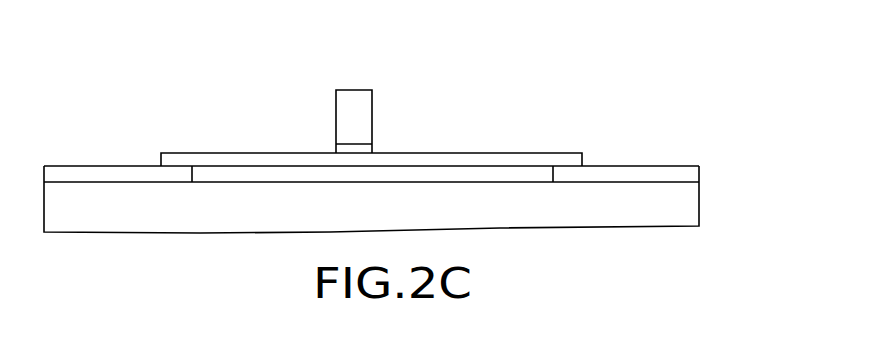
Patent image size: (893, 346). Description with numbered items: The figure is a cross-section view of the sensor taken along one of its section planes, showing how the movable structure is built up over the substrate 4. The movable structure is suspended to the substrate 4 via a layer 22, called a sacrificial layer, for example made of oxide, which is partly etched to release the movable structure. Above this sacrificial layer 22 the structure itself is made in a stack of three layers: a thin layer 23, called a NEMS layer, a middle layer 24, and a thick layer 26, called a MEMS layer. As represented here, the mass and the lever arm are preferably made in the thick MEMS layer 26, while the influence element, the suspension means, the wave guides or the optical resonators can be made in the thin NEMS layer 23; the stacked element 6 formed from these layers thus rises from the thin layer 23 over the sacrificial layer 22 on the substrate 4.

The substrate 4 is at (690, 197).
The sacrificial layer 22 is at (692, 173).
The NEMS layer 23 is at (575, 160).
The middle layer 24 is at (363, 149).
The MEMS layer 26 is at (363, 109).
The element 6 is at (284, 118).